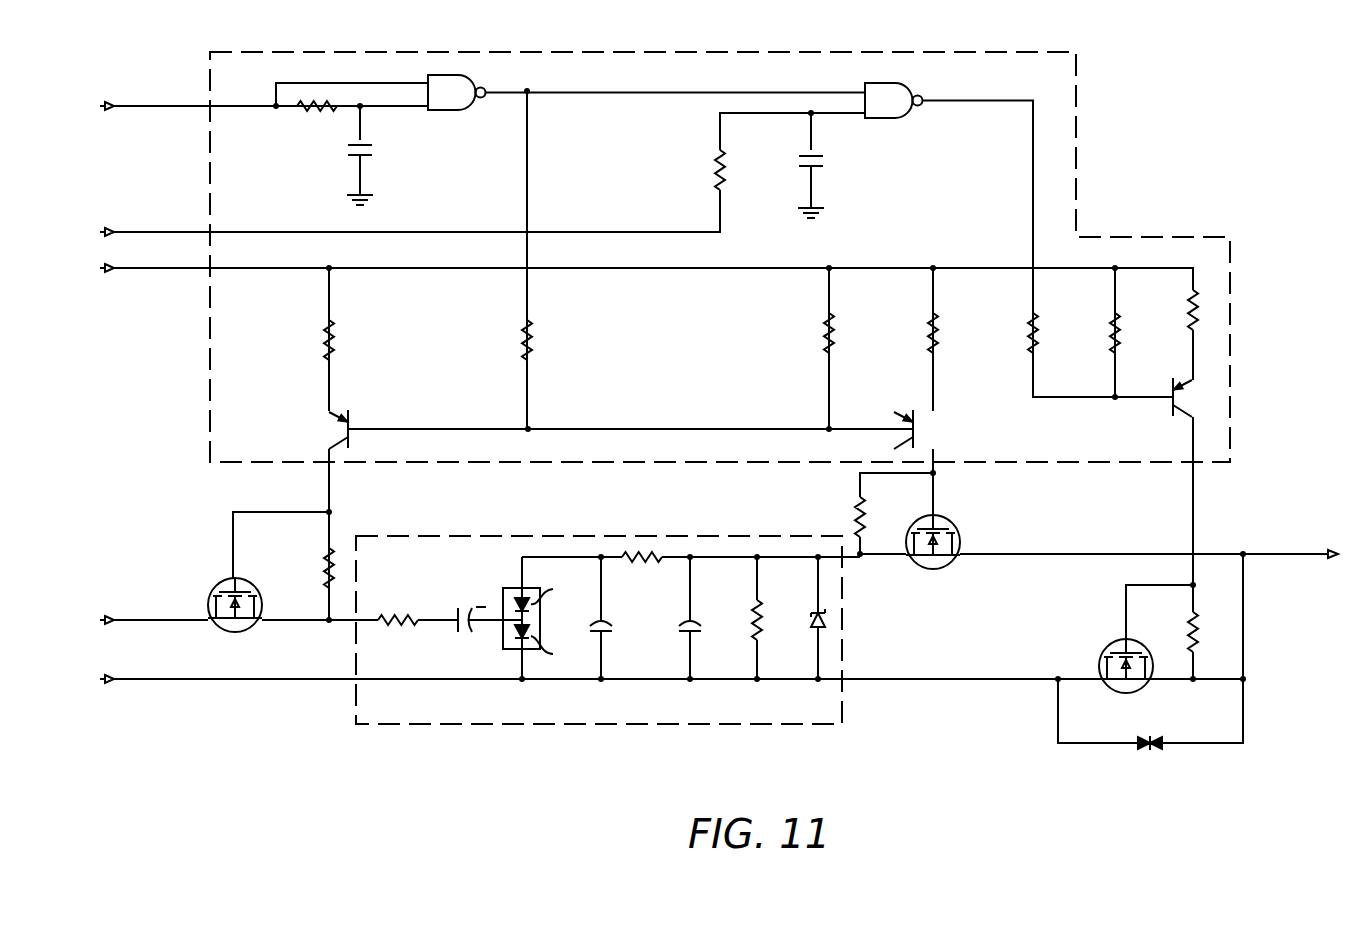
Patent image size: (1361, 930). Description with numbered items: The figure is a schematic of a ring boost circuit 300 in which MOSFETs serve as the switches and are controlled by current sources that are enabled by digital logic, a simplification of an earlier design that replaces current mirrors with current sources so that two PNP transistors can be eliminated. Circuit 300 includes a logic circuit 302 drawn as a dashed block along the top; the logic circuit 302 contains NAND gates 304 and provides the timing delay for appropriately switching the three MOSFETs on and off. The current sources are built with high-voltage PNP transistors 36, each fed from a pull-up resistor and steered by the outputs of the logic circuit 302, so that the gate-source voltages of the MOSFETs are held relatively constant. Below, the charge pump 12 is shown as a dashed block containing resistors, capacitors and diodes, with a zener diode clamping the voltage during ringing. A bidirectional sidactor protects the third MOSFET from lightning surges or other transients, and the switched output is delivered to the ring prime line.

The circuit 300 is at (1151, 131).
The logic circuit 302 is at (1077, 88).
The NAND gates 304 is at (444, 111).
The high-voltage PNP transistors 36 is at (352, 426).
The charge pump 12 is at (703, 725).